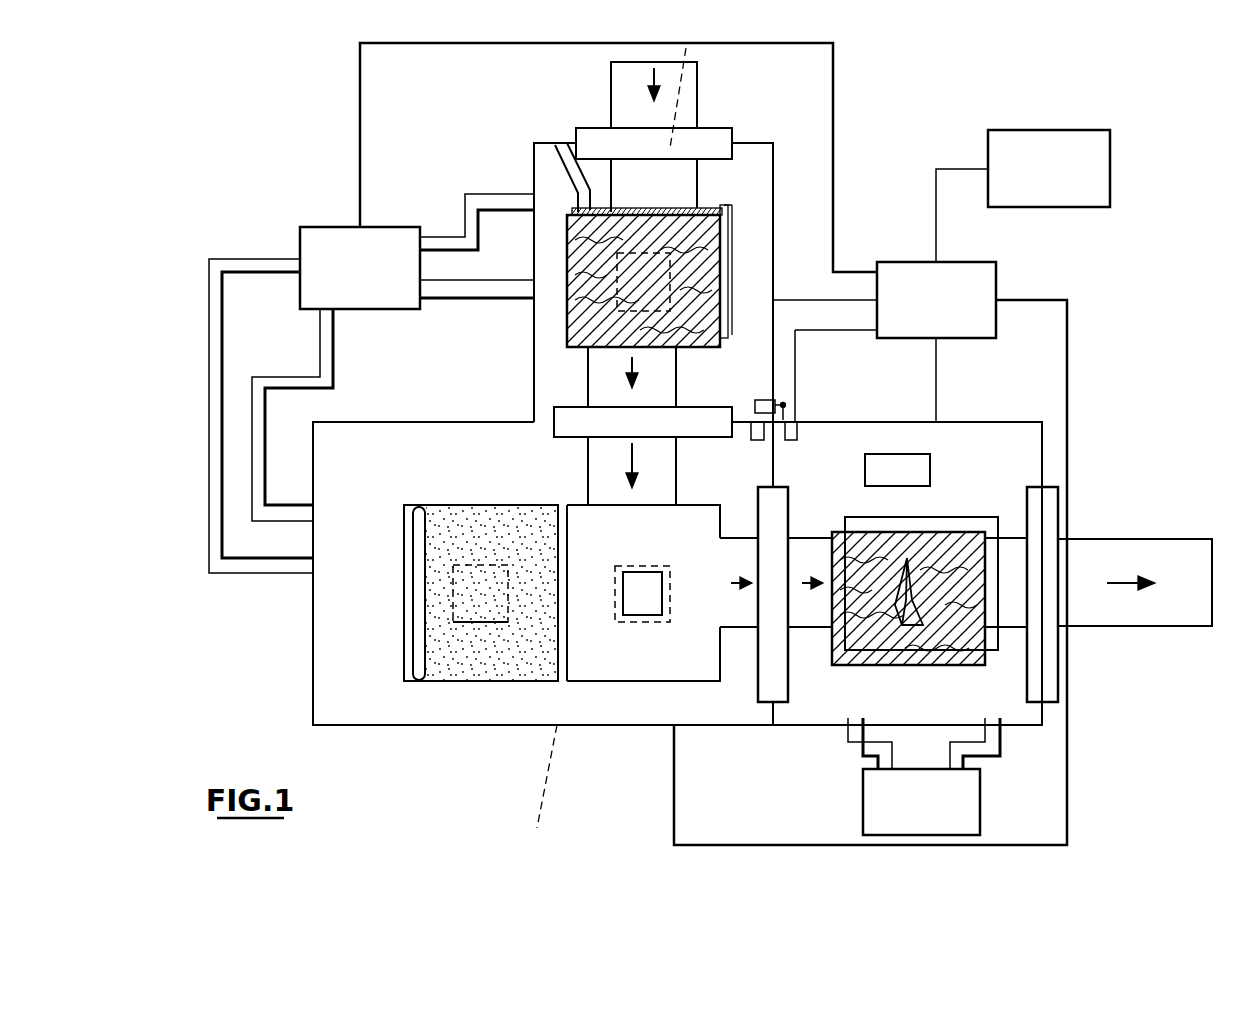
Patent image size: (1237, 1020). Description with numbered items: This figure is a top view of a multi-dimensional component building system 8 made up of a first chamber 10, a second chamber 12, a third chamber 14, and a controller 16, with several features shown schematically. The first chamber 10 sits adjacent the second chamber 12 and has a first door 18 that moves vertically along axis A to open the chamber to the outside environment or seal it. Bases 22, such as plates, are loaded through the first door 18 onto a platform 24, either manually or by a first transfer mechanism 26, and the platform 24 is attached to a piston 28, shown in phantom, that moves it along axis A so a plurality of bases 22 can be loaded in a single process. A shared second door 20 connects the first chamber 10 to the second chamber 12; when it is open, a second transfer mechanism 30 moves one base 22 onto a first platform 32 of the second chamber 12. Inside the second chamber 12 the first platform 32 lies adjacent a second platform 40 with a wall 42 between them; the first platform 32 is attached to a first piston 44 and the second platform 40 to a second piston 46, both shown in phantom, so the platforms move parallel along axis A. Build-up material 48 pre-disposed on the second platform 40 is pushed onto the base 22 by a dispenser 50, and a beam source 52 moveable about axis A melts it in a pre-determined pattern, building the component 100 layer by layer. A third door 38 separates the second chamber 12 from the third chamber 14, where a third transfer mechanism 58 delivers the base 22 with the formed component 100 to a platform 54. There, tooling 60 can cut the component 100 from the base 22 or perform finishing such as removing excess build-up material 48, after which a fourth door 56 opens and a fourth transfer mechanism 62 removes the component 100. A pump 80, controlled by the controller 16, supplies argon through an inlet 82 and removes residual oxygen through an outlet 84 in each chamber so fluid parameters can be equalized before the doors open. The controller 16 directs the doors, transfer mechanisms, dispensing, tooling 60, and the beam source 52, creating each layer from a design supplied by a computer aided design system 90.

The multi-dimensional component building system 8 is at (1117, 773).
The first chamber 10 is at (534, 170).
The second chamber 12 is at (452, 422).
The third chamber 14 is at (982, 432).
The controller 16 is at (997, 286).
The first door 18 is at (622, 136).
The second door 20 is at (556, 413).
The base 22 is at (708, 213).
The platform 24 is at (730, 237).
The first transfer mechanism 26 is at (697, 101).
The piston 28 is at (672, 263).
The second transfer mechanism 30 is at (678, 465).
The first platform 32 is at (556, 144).
The third door 38 is at (782, 498).
The second platform 40 is at (490, 683).
The wall 42 is at (562, 678).
The first piston 44 is at (645, 623).
The second piston 46 is at (467, 624).
The build-up material 48 is at (449, 607).
The dispenser 50 is at (418, 582).
The beam source 52 is at (655, 616).
The platform 54 is at (968, 517).
The fourth door 56 is at (1037, 541).
The third transfer mechanism 58 is at (741, 538).
The tooling 60 is at (915, 454).
The fourth transfer mechanism 62 is at (1167, 538).
The pump 80 is at (326, 227).
The inlet 82 is at (534, 297).
The outlet 84 is at (534, 212).
The computer aided design system 90 is at (1110, 140).
The component 100 is at (907, 622).
The axis A is at (693, 70).